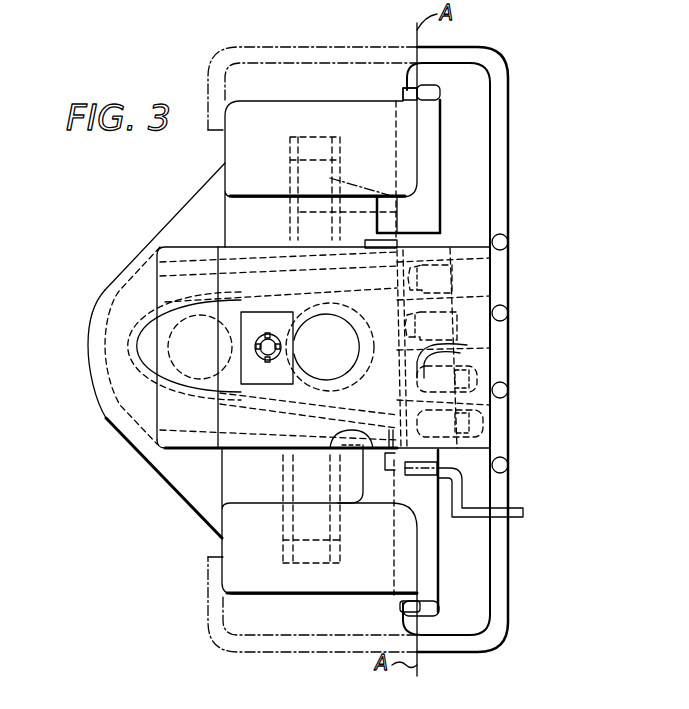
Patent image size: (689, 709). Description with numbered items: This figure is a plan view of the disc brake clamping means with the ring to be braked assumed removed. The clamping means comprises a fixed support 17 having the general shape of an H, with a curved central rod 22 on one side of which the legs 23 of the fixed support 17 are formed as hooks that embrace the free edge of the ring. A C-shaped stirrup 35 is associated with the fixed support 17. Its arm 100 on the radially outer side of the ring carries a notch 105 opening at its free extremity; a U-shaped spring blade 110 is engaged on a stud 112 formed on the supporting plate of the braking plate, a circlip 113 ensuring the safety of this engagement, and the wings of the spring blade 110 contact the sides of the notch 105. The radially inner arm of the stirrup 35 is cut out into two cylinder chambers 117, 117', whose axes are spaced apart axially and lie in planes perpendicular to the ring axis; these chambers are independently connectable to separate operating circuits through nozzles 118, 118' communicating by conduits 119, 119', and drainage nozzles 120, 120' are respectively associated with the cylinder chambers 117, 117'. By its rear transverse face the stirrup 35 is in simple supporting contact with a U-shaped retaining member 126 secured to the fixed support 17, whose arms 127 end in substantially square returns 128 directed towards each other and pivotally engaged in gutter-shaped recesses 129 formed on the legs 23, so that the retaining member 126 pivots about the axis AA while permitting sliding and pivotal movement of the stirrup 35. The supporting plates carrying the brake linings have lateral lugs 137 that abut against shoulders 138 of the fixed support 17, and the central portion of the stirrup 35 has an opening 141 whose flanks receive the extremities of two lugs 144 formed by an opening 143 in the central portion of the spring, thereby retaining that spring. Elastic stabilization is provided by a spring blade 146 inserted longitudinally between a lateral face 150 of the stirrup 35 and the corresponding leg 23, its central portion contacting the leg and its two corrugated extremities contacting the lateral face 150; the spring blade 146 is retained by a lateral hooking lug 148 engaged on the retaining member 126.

The fixed support 17 is at (157, 226).
The curved central rod 22 is at (100, 385).
The legs of the fixed support 23 is at (408, 147).
The stirrup 35 is at (466, 242).
The arm of the stirrup 100 is at (232, 447).
The notch 105 is at (234, 321).
The spring blade 110 is at (230, 356).
The stud 112 is at (283, 346).
The circlip 113 is at (236, 367).
The cylinder chamber 117 is at (143, 346).
The cylinder chamber 117' is at (278, 416).
The nozzle 118 is at (485, 263).
The nozzle 118' is at (484, 309).
The conduit 119 is at (278, 249).
The conduit 119' is at (368, 261).
The drainage nozzle 120 is at (486, 423).
The drainage nozzle 120' is at (488, 375).
The retaining member 126 is at (512, 531).
The arms of the retaining member 127 is at (474, 50).
The square returns 128 is at (410, 89).
The gutter-shaped recesses 129 is at (440, 94).
The lugs 137 is at (384, 198).
The shoulders 138 is at (346, 236).
The opening 141 is at (475, 318).
The opening 143 is at (366, 380).
The lugs 144 is at (460, 355).
The spring blade 146 is at (421, 493).
The lateral hooking lug 148 is at (478, 514).
The lateral face of the stirrup 150 is at (480, 478).